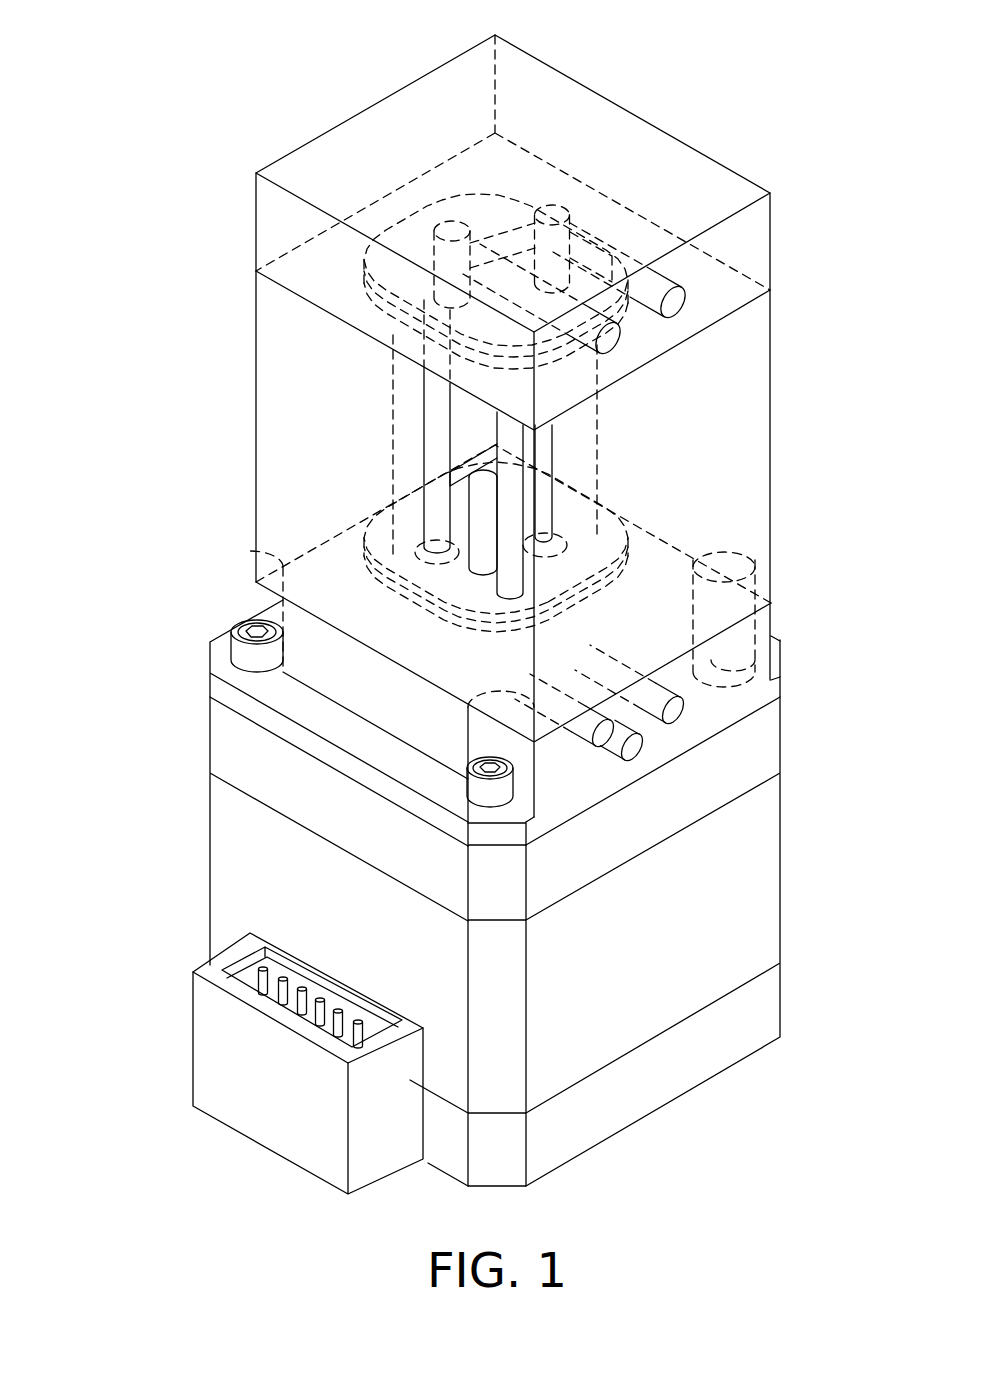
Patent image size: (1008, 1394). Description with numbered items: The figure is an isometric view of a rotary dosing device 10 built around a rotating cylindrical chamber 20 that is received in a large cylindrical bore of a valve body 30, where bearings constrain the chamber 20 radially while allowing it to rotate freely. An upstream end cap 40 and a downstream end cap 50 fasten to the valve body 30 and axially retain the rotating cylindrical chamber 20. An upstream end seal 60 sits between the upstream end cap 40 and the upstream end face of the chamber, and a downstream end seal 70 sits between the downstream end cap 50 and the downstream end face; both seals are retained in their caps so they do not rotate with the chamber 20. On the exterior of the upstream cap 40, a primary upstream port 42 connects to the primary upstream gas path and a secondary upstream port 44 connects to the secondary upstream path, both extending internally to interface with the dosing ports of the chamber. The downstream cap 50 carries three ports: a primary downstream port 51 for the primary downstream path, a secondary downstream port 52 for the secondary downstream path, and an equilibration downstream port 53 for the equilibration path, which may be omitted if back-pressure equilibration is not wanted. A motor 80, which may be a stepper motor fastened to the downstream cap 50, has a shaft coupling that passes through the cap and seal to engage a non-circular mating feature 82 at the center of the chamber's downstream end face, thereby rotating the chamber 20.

The rotary dosing device 10 is at (172, 96).
The rotating cylindrical chamber 20 is at (393, 463).
The valve body 30 is at (722, 420).
The upstream end cap 40 is at (598, 130).
The primary upstream port 42 is at (678, 305).
The secondary upstream port 44 is at (628, 352).
The downstream end cap 50 is at (340, 673).
The primary downstream port 51 is at (685, 716).
The secondary downstream port 52 is at (637, 707).
The equilibration downstream port 53 is at (660, 765).
The upstream end seal 60 is at (393, 278).
The downstream end seal 70 is at (370, 587).
The motor 80 is at (295, 906).
The mating feature 82 is at (480, 512).